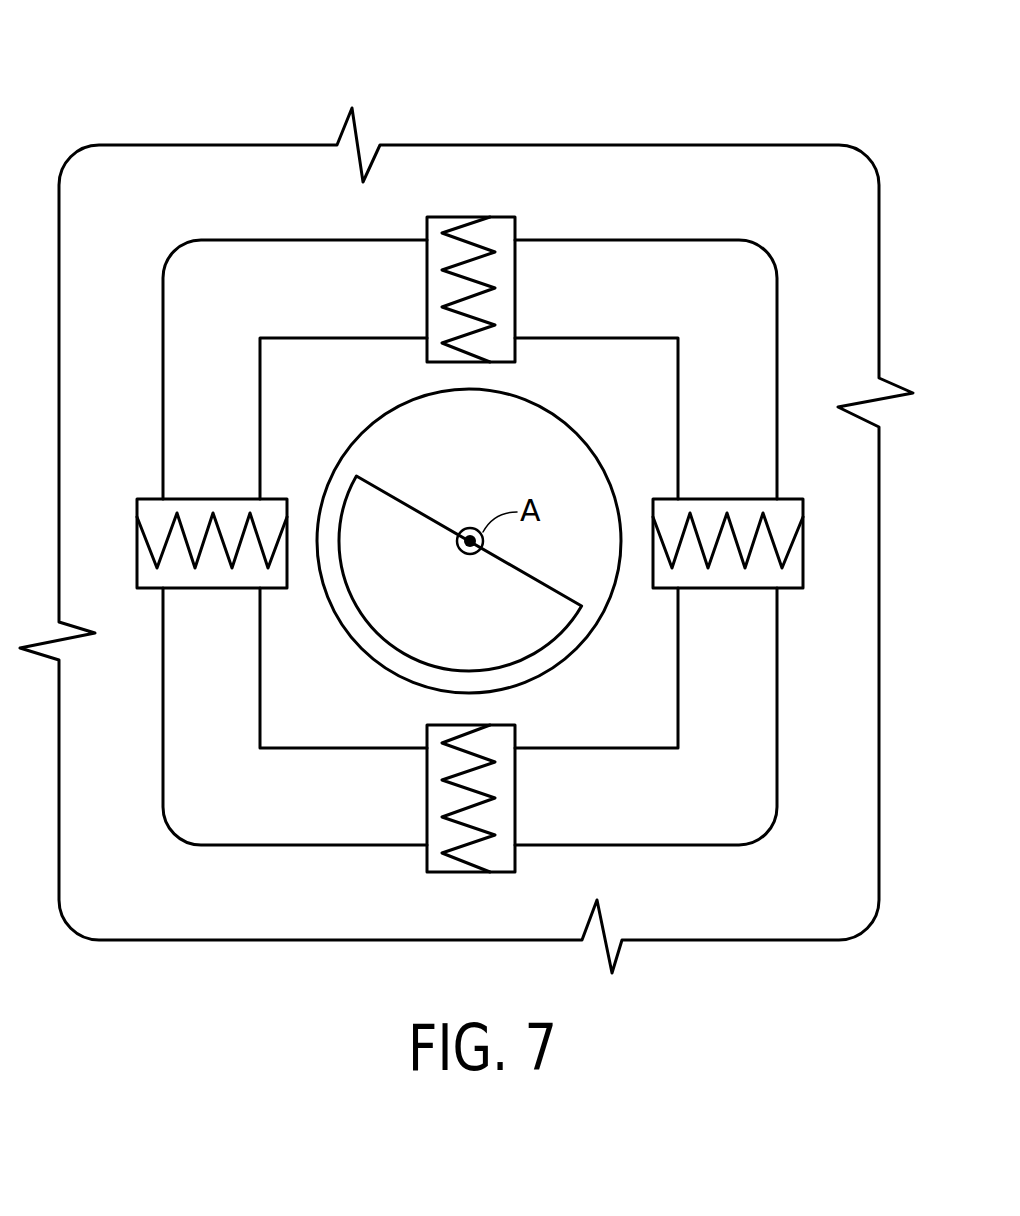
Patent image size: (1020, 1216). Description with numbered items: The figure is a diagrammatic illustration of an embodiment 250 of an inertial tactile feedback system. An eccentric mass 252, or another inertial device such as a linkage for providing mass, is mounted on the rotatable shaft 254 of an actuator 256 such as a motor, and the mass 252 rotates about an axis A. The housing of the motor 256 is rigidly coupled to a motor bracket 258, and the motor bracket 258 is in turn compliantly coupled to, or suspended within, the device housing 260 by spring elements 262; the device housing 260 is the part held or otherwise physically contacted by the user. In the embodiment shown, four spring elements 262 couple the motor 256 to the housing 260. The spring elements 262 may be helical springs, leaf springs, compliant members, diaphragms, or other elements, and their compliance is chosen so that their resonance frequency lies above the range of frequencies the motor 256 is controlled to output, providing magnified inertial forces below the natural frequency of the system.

The inertial tactile feedback system 250 is at (598, 72).
The eccentric mass 252 is at (455, 611).
The rotatable shaft 254 is at (466, 530).
The actuator 256 is at (535, 473).
The motor bracket 258 is at (648, 393).
The device housing 260 is at (852, 218).
The spring elements 262 is at (483, 293).